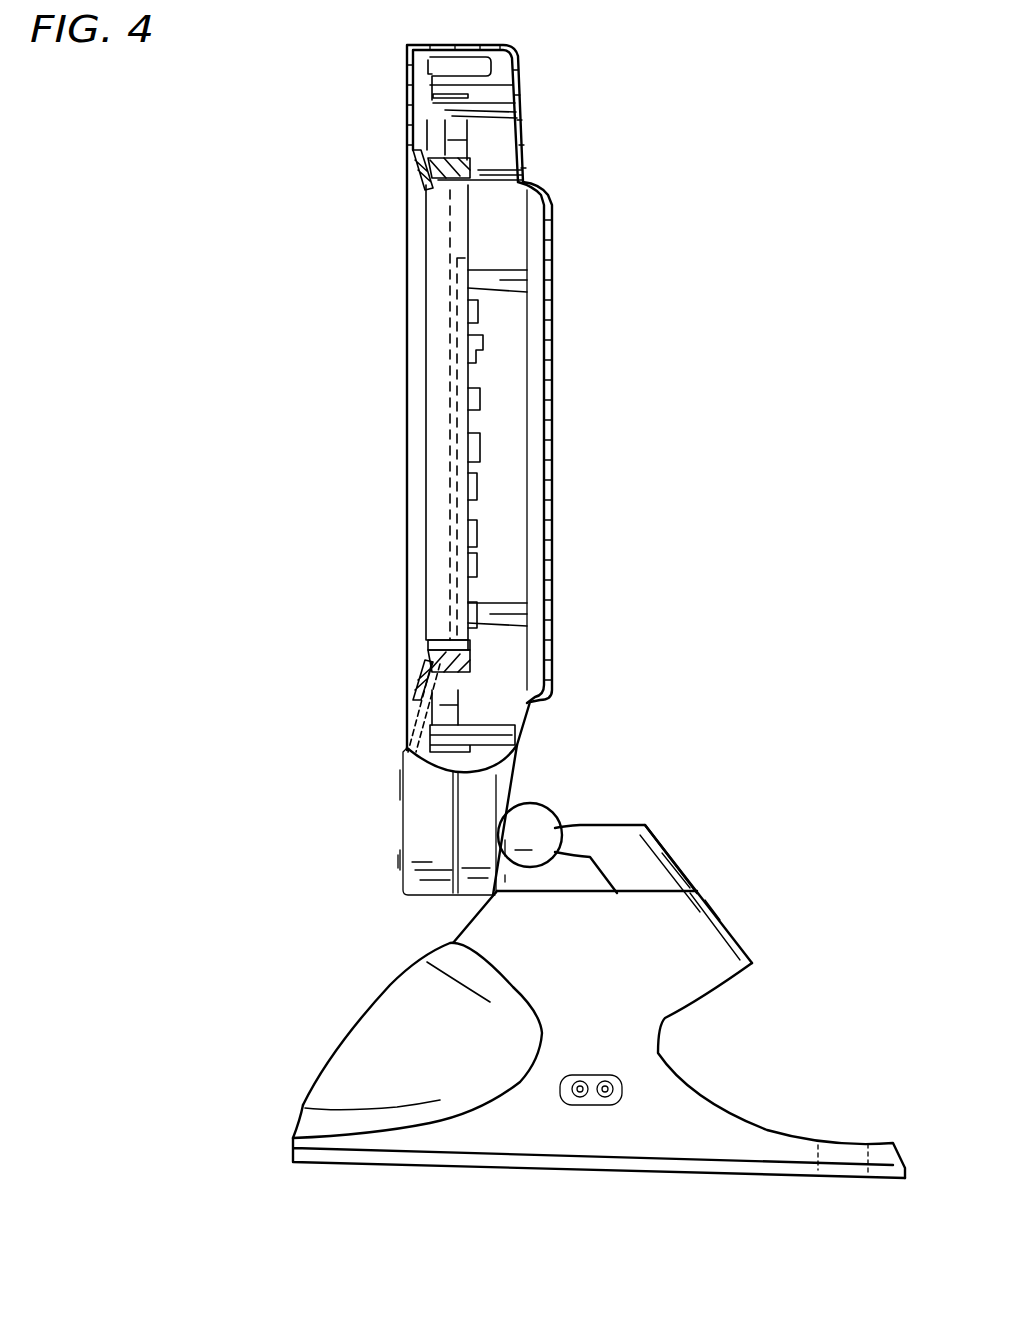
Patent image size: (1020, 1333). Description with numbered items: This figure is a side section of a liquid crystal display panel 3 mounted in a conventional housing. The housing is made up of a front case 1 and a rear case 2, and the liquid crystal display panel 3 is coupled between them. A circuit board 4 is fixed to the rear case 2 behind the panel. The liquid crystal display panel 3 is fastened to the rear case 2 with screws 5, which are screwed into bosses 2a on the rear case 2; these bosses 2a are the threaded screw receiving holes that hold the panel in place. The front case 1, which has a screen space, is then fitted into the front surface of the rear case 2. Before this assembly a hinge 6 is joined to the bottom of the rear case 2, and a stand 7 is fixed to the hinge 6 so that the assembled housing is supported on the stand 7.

The front case 1 is at (407, 106).
The rear case 2 is at (551, 392).
The boss 2a is at (498, 165).
The liquid crystal display panel 3 is at (430, 461).
The circuit board 4 is at (480, 455).
The screw 5 is at (440, 160).
The hinge 6 is at (618, 826).
The stand 7 is at (342, 1030).